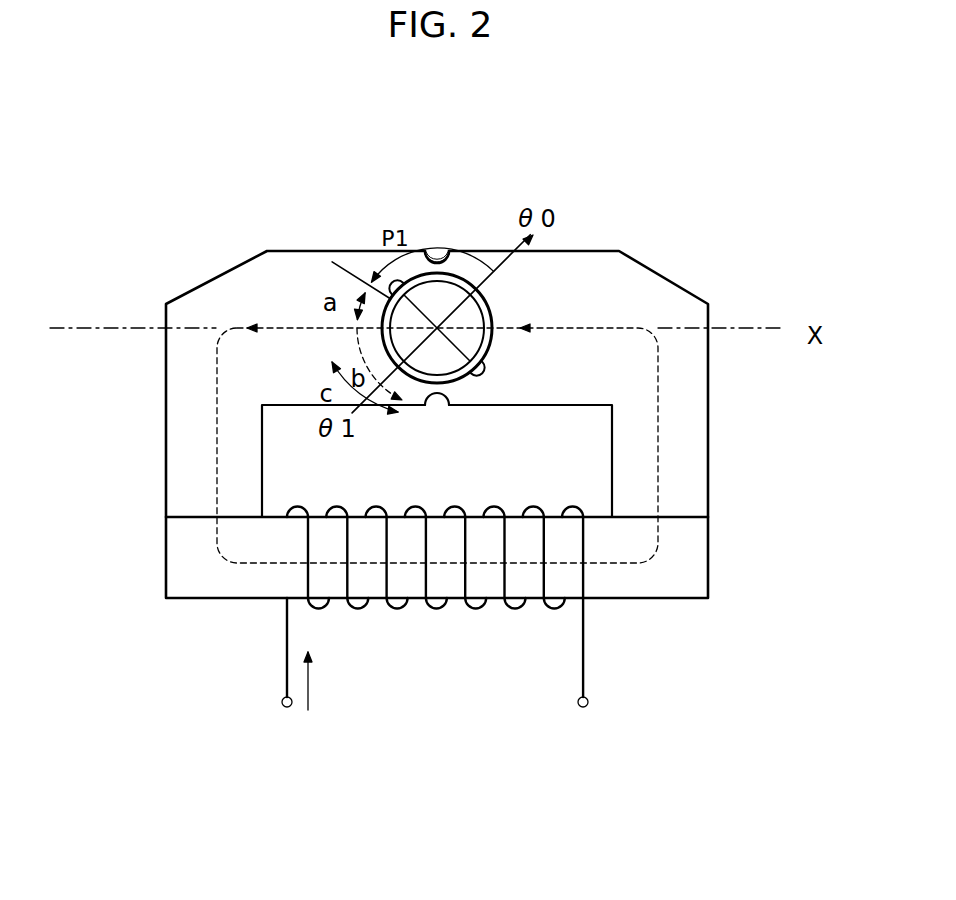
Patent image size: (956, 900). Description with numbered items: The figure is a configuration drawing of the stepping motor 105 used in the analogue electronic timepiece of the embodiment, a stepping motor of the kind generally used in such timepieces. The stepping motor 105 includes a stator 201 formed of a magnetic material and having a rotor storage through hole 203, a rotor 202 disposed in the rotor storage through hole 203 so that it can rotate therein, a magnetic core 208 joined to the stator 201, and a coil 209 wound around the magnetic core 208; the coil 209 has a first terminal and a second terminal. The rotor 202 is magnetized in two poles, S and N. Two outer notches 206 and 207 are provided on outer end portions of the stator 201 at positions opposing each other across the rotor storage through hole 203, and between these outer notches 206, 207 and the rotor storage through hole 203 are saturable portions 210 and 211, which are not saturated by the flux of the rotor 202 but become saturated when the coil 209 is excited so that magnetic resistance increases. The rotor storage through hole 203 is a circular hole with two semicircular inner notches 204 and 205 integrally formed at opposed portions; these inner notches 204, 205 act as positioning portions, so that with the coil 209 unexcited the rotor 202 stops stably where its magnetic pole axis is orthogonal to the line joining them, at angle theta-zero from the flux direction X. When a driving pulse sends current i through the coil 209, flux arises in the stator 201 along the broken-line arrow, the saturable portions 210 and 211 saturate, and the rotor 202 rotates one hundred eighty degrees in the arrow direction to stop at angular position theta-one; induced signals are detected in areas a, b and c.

The stepping motor 105 is at (177, 263).
The stator 201 is at (685, 392).
The rotor 202 is at (472, 320).
The rotor storage through hole 203 is at (483, 305).
The notched portion (inner notch) 204 is at (482, 370).
The notched portion (inner notch) 205 is at (400, 285).
The notched portion (outer notch) 206 is at (442, 258).
The notched portion (outer notch) 207 is at (440, 403).
The magnetic core 208 is at (182, 561).
The coil 209 is at (400, 612).
The saturable portion 210 is at (435, 262).
The saturable portion 211 is at (445, 390).